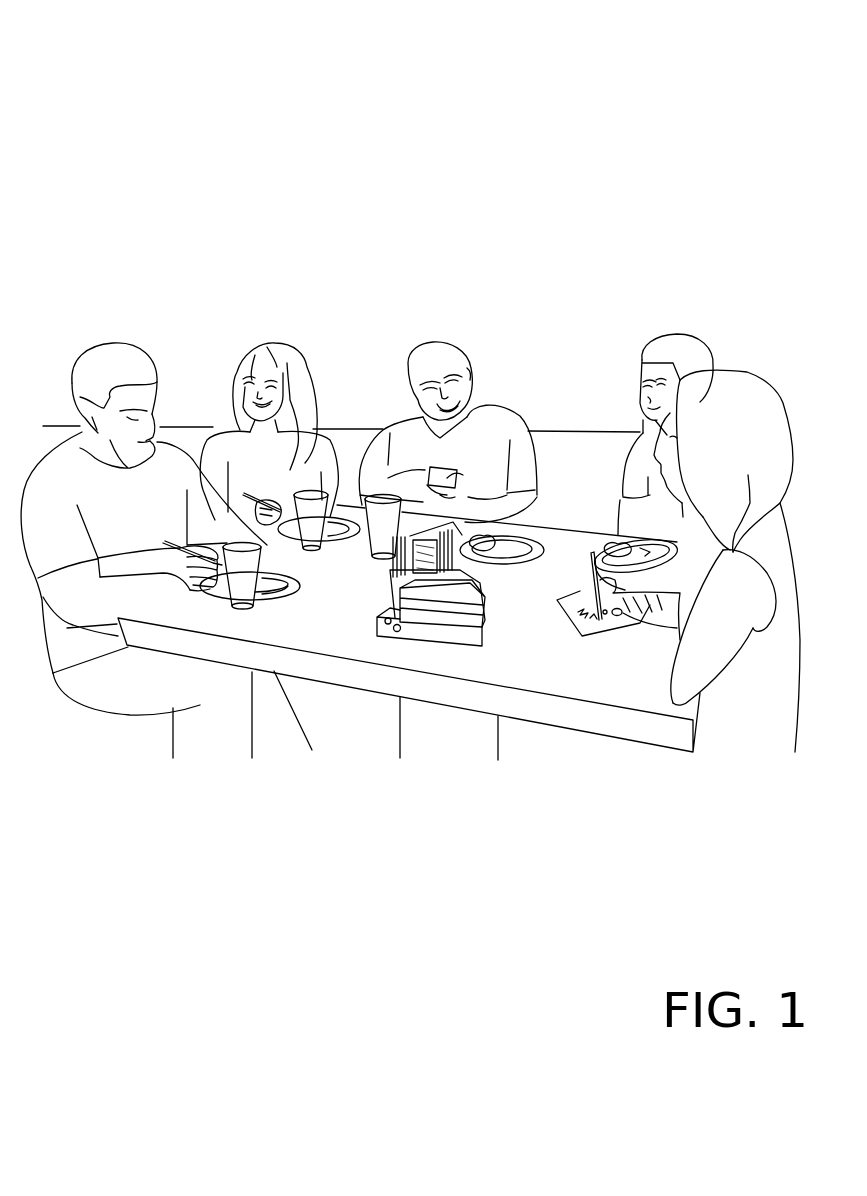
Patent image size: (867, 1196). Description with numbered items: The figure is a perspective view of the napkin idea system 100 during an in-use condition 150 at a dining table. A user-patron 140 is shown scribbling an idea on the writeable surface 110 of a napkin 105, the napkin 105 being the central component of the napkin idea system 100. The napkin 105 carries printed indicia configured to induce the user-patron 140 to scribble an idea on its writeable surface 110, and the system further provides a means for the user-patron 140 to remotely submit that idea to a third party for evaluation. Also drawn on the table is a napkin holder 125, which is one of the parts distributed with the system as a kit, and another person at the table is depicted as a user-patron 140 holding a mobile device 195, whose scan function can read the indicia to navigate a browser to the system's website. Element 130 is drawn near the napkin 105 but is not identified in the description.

The napkin idea system 100 is at (585, 92).
The in-use condition 150 is at (627, 122).
The user-patron 140 is at (417, 434).
The mobile device 195 is at (482, 406).
The napkin holder 125 is at (440, 637).
The bowl 130 is at (568, 608).
The napkin 105 is at (598, 633).
The writeable surface 110 is at (640, 623).